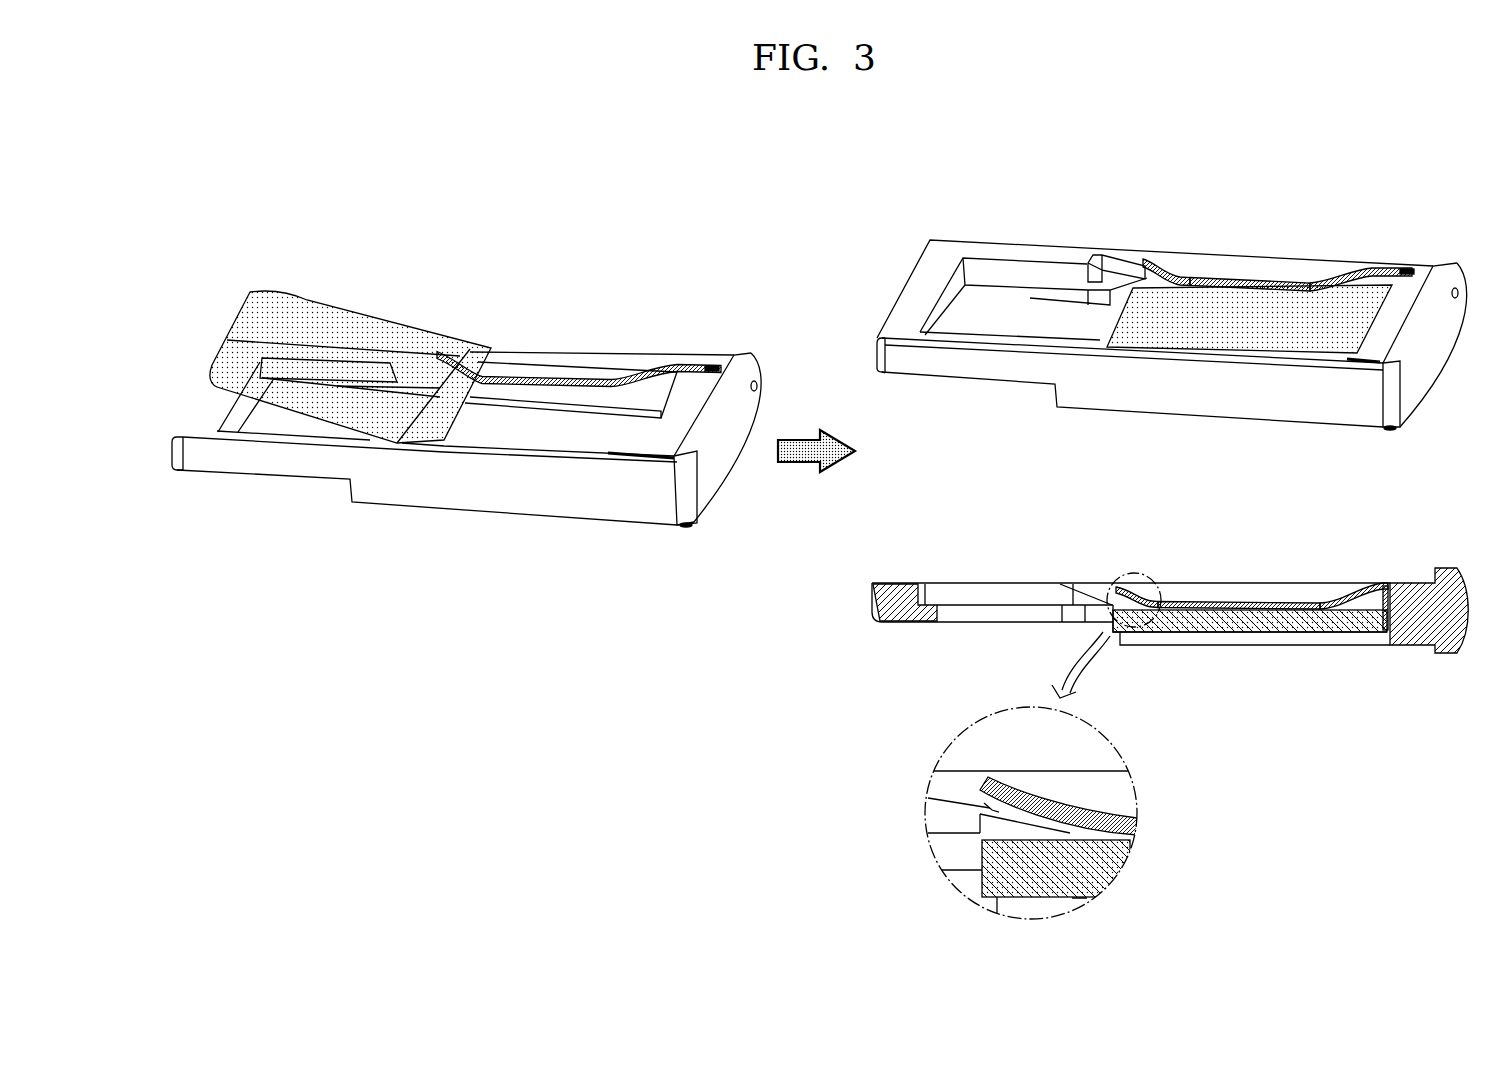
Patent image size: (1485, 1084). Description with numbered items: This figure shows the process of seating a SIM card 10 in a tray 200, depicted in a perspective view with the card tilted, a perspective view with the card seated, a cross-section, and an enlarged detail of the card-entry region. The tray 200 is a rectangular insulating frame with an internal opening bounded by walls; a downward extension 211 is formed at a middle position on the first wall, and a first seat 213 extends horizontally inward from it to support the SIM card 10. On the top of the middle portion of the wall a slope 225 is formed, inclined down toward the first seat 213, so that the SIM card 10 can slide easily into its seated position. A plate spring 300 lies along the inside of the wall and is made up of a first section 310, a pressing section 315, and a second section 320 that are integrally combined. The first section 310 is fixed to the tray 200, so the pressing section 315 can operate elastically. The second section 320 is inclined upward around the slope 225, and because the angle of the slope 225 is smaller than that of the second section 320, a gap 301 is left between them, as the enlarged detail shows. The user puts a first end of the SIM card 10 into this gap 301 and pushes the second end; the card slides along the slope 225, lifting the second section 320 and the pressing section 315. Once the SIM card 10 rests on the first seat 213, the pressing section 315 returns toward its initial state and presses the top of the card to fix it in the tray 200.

The SIM card 10 is at (352, 322).
The tray 200 is at (175, 453).
The 1-1 extension 211 is at (1157, 640).
The first seat 213 is at (537, 402).
The slope 225 is at (1108, 265).
The plate spring 300 is at (925, 489).
The gap 301 is at (985, 803).
The first section 310 is at (1362, 410).
The pressing section 315 is at (1263, 278).
The second section 320 is at (1167, 258).